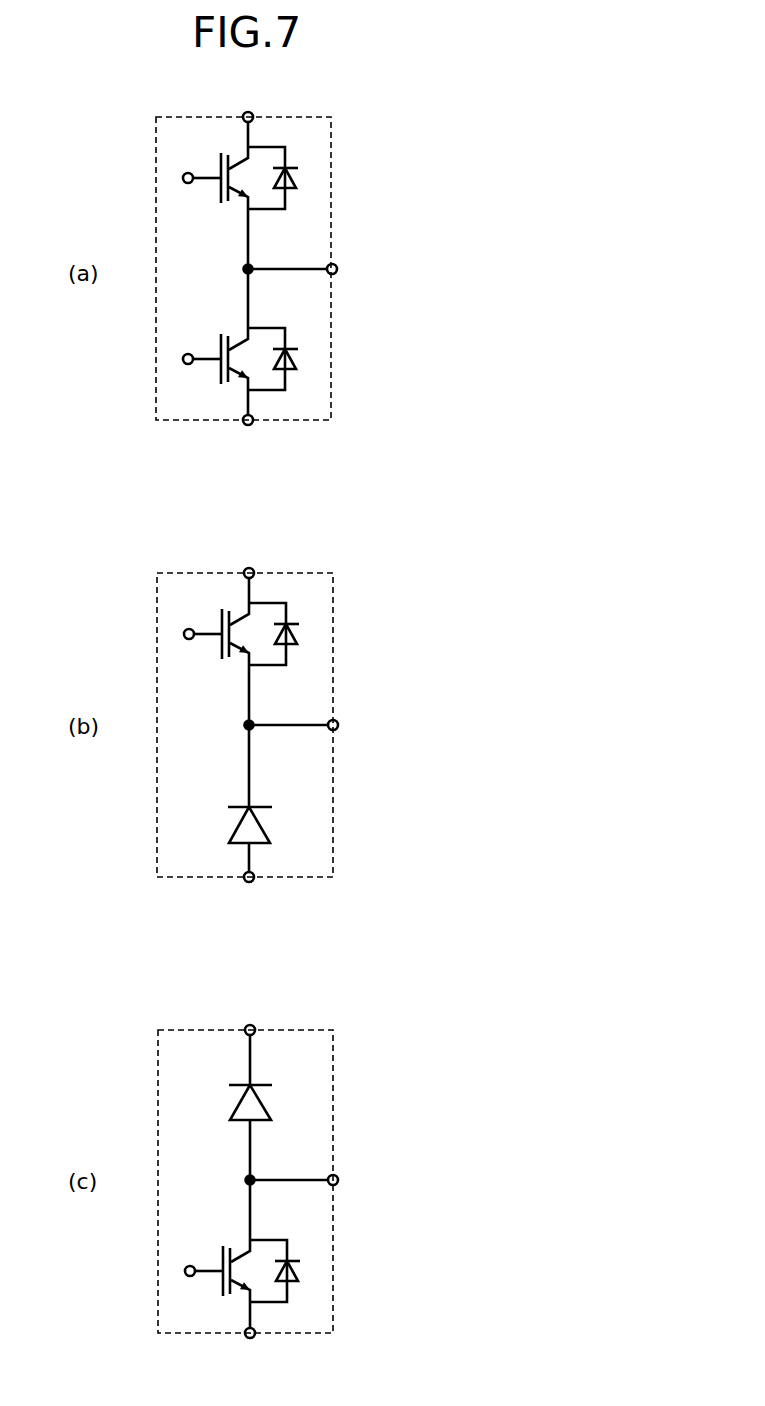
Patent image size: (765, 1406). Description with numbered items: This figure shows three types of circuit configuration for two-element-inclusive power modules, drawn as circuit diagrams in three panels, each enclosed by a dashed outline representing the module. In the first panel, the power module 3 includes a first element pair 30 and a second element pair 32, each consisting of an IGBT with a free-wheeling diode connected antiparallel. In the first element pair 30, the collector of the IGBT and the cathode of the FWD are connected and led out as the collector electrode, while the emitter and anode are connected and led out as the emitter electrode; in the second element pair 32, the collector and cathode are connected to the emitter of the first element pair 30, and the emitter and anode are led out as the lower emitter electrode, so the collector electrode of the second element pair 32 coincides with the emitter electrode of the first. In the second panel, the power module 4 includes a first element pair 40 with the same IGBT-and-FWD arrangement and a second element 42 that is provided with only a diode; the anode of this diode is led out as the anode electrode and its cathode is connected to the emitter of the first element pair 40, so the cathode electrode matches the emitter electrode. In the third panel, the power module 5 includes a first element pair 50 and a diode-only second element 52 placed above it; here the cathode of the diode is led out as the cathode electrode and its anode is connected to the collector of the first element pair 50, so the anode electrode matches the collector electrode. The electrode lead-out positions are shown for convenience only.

The power module 3 is at (318, 117).
The first element pair 30 is at (313, 178).
The second element pair 32 is at (313, 364).
The power module 4 is at (319, 573).
The first element pair 40 is at (313, 634).
The second element 42 is at (284, 827).
The power module 5 is at (320, 1030).
The second element 52 is at (285, 1104).
The first element pair 50 is at (315, 1270).